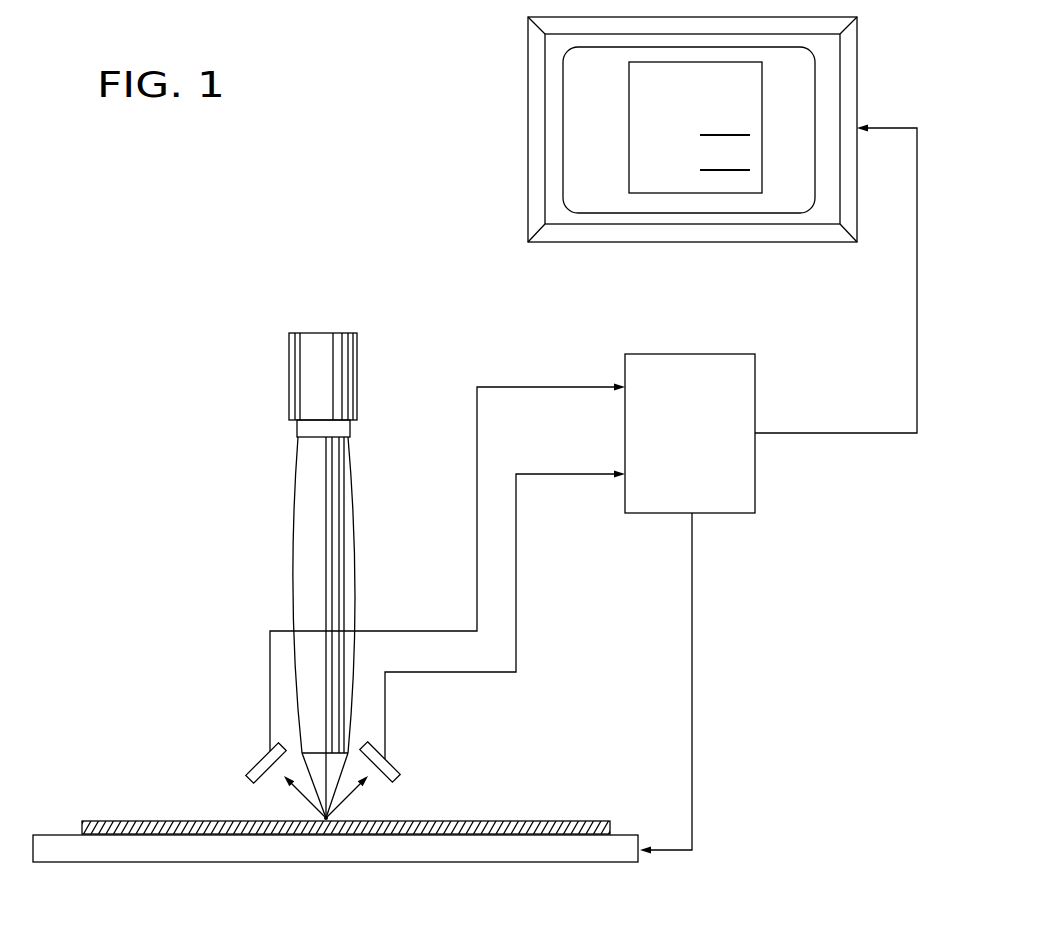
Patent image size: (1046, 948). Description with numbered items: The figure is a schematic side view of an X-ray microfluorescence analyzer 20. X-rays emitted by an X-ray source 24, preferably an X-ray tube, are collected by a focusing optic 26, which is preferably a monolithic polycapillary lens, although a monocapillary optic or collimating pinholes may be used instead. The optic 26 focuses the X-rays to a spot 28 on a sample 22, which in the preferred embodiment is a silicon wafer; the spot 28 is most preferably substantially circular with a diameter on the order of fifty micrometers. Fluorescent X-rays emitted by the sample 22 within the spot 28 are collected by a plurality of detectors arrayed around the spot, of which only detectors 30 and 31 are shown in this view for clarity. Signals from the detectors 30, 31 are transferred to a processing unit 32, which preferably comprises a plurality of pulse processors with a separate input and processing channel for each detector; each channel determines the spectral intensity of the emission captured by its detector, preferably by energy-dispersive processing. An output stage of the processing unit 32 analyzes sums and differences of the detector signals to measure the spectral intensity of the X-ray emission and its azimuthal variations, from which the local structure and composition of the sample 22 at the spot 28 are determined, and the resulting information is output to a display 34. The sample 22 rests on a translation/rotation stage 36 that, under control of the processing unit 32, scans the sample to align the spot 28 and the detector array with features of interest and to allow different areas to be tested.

The X-ray microfluorescence analyzer 20 is at (158, 429).
The sample 22 is at (128, 819).
The X-ray source 24 is at (330, 333).
The focusing optic 26 is at (354, 500).
The spot 28 is at (328, 816).
The detector 30 is at (392, 760).
The detector 31 is at (263, 762).
The processing unit 32 is at (688, 353).
The display 34 is at (527, 117).
The translation/rotation stage 36 is at (345, 864).